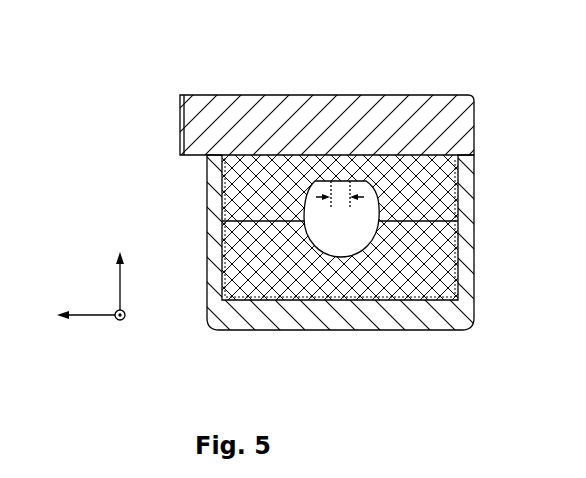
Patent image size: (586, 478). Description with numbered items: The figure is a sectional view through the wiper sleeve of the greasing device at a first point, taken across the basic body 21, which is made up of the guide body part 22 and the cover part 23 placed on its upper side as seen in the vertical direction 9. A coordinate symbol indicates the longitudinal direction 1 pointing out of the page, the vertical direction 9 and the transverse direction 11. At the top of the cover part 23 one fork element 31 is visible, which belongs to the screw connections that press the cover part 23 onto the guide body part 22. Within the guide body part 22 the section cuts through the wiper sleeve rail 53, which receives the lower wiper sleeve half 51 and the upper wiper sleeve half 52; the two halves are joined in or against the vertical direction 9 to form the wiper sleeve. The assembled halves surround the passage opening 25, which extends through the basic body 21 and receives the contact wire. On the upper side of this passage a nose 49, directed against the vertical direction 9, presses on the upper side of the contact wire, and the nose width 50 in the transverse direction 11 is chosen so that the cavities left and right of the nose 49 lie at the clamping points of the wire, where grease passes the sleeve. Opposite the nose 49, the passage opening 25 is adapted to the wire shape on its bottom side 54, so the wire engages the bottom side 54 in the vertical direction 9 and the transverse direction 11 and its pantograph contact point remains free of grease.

The basic body 21 is at (154, 67).
The cover part 23 is at (474, 123).
The fork element 31 is at (193, 95).
The guide body part 22 is at (474, 218).
The upper wiper sleeve half 52 is at (418, 186).
The lower wiper sleeve half 51 is at (420, 247).
The wiper sleeve rail 53 is at (450, 272).
The nose width 50 is at (356, 205).
The nose 49 is at (343, 181).
The passage opening 25 is at (318, 212).
The bottom side 54 is at (323, 238).
The longitudinal direction 1 is at (128, 315).
The vertical direction 9 is at (117, 262).
The transverse direction 11 is at (64, 312).